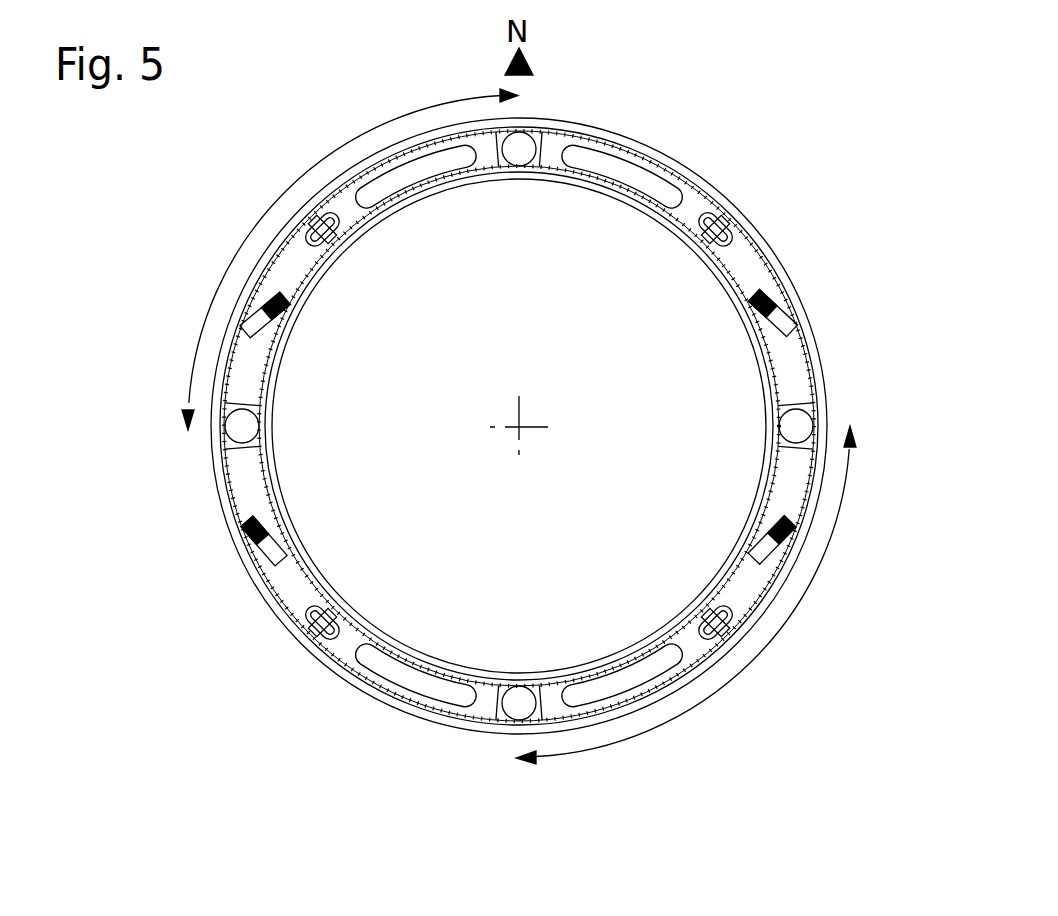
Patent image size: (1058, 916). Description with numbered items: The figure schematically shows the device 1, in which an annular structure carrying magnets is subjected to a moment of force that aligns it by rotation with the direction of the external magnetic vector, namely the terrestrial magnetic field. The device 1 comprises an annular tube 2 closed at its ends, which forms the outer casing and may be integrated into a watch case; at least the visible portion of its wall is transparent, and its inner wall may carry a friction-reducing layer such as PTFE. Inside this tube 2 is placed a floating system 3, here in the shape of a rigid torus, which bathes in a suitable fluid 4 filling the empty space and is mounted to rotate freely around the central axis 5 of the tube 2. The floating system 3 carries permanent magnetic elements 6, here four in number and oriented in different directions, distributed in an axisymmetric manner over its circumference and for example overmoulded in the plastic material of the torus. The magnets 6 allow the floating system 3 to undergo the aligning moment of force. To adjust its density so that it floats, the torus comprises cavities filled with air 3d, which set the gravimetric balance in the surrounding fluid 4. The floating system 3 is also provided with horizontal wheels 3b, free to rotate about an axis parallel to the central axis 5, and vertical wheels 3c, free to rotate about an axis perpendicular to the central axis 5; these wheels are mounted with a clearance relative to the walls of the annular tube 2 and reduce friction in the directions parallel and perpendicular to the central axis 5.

The device 1 is at (152, 206).
The annular tube 2 is at (751, 224).
The floating system 3 is at (745, 279).
The horizontal wheels 3b is at (523, 148).
The vertical wheels 3c is at (316, 232).
The cavities filled with air 3d is at (400, 172).
The fluid 4 is at (682, 635).
The central axis 5 is at (519, 425).
The permanent magnetic elements 6 is at (258, 308).